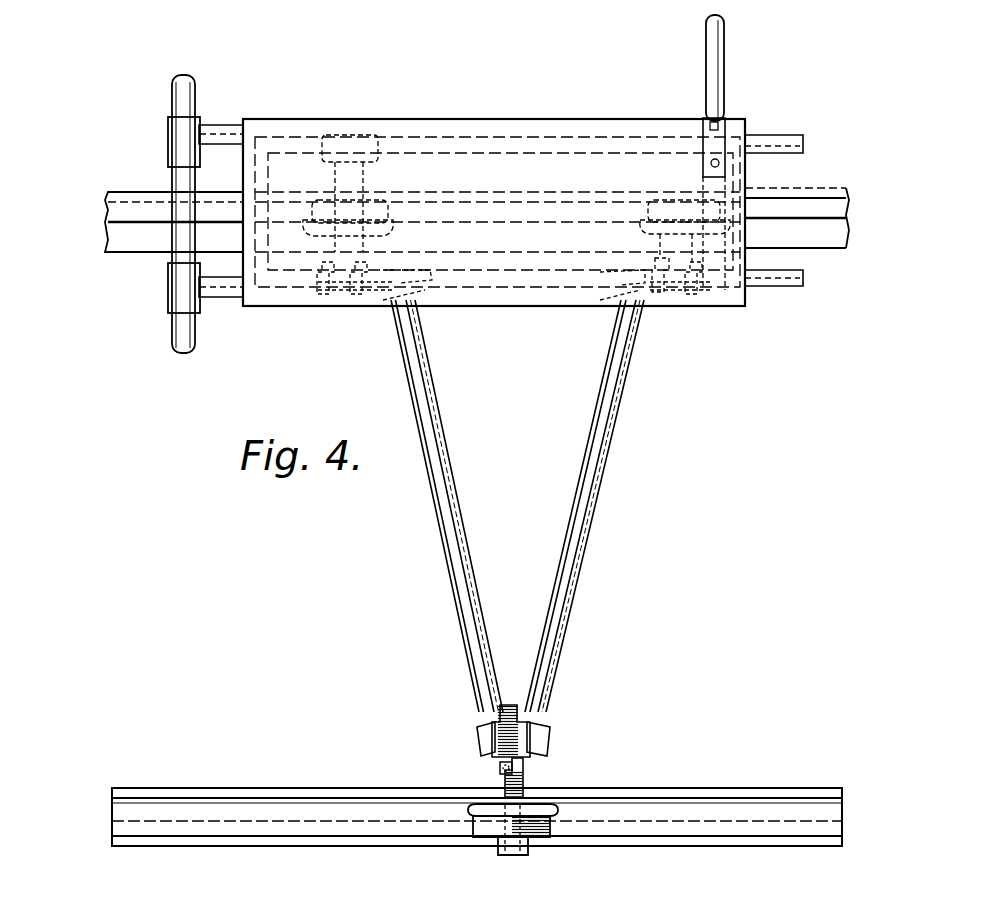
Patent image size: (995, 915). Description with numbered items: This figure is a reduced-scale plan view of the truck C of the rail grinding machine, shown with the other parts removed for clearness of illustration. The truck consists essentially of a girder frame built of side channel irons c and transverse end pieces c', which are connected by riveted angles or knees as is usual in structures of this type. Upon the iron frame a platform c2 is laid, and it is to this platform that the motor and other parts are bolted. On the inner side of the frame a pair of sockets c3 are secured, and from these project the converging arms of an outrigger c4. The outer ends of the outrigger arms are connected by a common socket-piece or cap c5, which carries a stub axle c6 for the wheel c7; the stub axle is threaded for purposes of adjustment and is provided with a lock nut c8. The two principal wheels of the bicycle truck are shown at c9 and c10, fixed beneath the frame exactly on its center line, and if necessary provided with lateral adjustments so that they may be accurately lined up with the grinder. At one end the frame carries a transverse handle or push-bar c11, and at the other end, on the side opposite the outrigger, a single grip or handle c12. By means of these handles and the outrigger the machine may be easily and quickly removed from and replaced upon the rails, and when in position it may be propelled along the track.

The truck C is at (501, 190).
The side channel irons c is at (497, 192).
The transverse end pieces c' is at (475, 211).
The platform c2 is at (292, 320).
The sockets c3 is at (672, 318).
The outrigger c4 is at (567, 555).
The socket-piece or cap c5 is at (550, 742).
The stub axle c6 is at (528, 781).
The wheel c7 is at (551, 824).
The lock nut c8 is at (498, 770).
The principal wheel c9 is at (392, 216).
The principal wheel c10 is at (656, 206).
The transverse handle or push-bar c11 is at (178, 186).
The grip or handle c12 is at (727, 80).